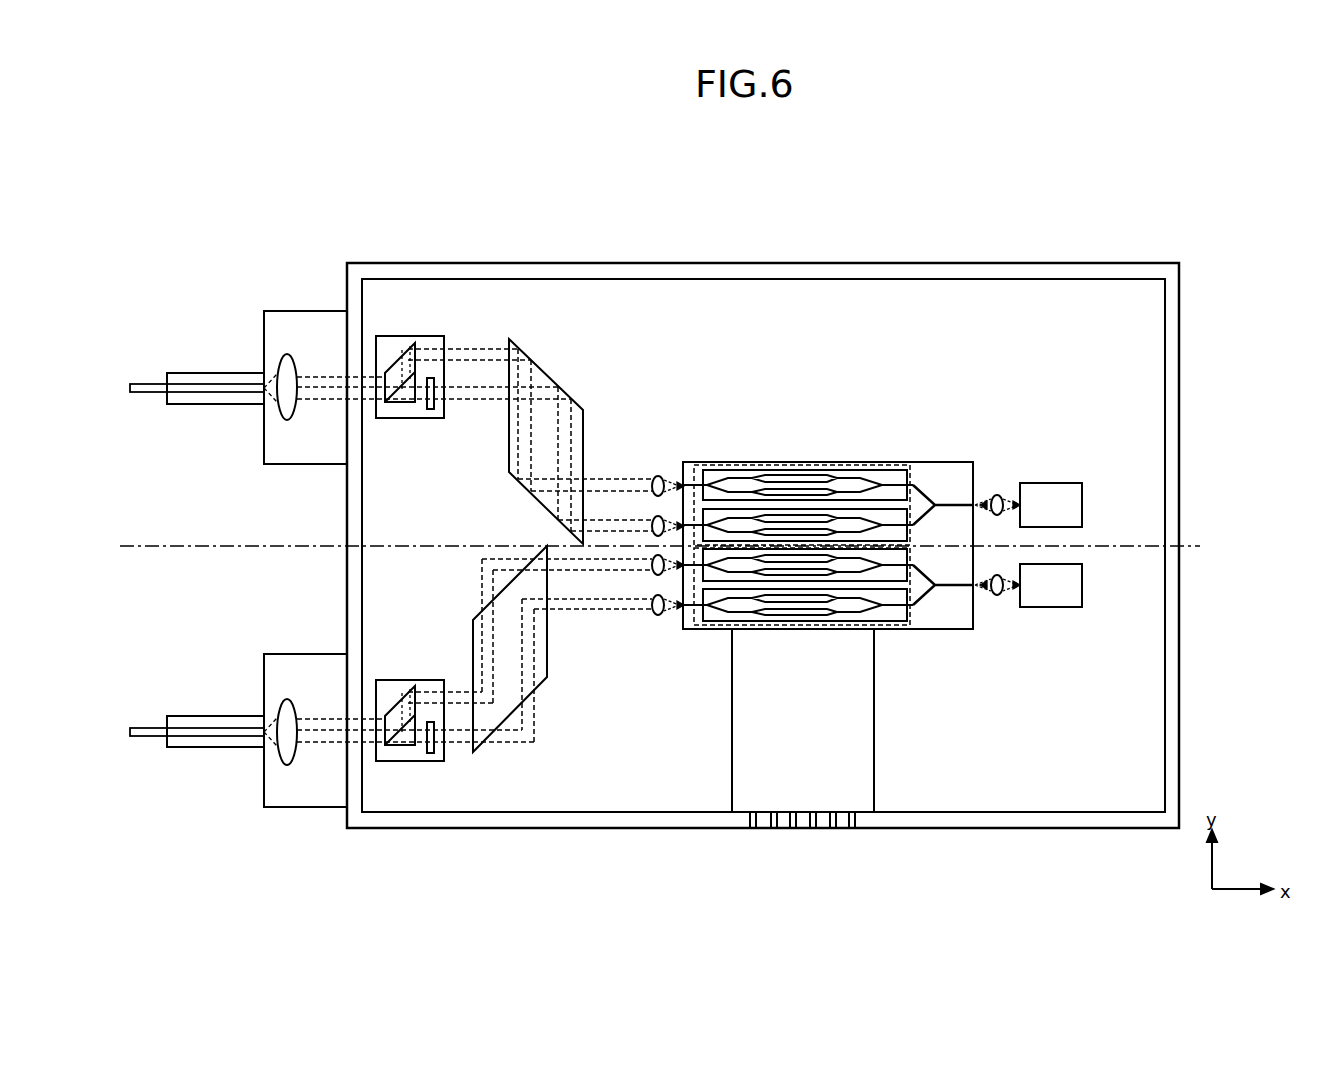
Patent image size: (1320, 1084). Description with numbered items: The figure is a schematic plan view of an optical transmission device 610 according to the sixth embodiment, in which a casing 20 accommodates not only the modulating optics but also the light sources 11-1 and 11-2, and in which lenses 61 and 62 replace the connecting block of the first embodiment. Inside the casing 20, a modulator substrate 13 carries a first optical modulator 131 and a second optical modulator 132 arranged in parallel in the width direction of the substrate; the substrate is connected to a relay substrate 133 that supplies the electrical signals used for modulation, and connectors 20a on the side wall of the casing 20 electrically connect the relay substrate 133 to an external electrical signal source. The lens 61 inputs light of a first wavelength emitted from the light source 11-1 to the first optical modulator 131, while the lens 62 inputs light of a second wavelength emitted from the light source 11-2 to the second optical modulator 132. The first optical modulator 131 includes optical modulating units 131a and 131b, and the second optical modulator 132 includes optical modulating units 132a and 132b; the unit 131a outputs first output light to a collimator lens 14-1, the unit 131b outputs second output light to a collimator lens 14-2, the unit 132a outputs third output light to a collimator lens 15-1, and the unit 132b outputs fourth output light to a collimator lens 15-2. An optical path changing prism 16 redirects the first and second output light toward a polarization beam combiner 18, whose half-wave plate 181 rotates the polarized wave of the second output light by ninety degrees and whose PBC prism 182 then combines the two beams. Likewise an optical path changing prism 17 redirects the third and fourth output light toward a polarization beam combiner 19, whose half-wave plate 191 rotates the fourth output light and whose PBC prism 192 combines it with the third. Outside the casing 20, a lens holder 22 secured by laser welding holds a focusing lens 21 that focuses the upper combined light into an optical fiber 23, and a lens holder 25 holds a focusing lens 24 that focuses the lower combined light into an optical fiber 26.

The optical transmission device 610 is at (738, 192).
The casing 20 is at (897, 262).
The connectors 20a is at (832, 828).
The lens holder 22 is at (310, 301).
The focusing lens 21 is at (268, 364).
The optical fiber 23 is at (178, 361).
The polarization beam combiner 18 is at (435, 339).
The PBC prism 182 is at (405, 403).
The half-wave plate 181 is at (431, 410).
The optical path changing prism 16 is at (542, 372).
The collimator lens 14-1 is at (652, 479).
The collimator lens 14-2 is at (652, 519).
The collimator lens 15-1 is at (652, 571).
The collimator lens 15-2 is at (652, 613).
The modulator substrate 13 is at (890, 463).
The first optical modulator 131 is at (803, 466).
The optical modulating unit 131a is at (912, 483).
The optical modulating unit 131b is at (912, 533).
The second optical modulator 132 is at (886, 630).
The optical modulating unit 132a is at (912, 556).
The optical modulating unit 132b is at (912, 611).
The relay substrate 133 is at (875, 724).
The lens 61 is at (997, 494).
The lens 62 is at (997, 597).
The light source 11-1 is at (1083, 505).
The light source 11-2 is at (1083, 585).
The lens holder 25 is at (307, 808).
The focusing lens 24 is at (270, 755).
The optical fiber 26 is at (176, 748).
The polarization beam combiner 19 is at (435, 682).
The PBC prism 192 is at (405, 746).
The half-wave plate 191 is at (431, 754).
The optical path changing prism 17 is at (506, 587).